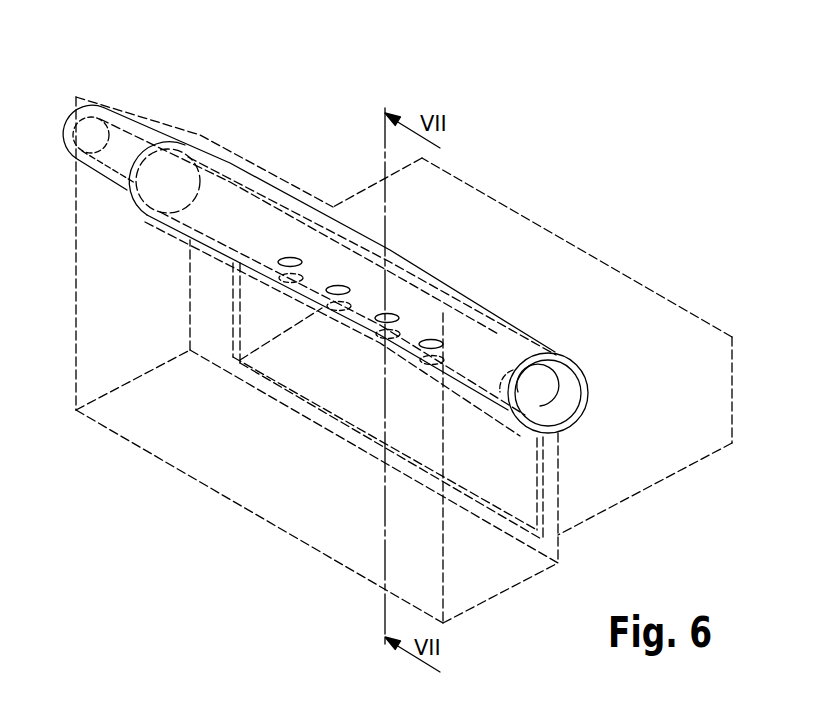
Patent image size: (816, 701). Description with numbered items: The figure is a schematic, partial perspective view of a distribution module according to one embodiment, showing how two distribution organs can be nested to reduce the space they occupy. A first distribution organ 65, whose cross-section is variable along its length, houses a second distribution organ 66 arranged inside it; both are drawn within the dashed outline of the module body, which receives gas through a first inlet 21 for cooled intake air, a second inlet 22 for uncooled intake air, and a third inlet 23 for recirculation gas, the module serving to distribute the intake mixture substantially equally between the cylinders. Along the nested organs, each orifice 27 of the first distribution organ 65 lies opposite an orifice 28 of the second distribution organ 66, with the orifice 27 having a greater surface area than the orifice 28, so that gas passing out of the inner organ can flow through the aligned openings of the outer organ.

The first inlet 21 is at (307, 364).
The second inlet 22 is at (568, 385).
The third inlet 23 is at (67, 123).
The orifice 27 is at (337, 310).
The orifice 28 is at (341, 286).
The first distribution organ 65 is at (227, 157).
The second distribution organ 66 is at (110, 153).